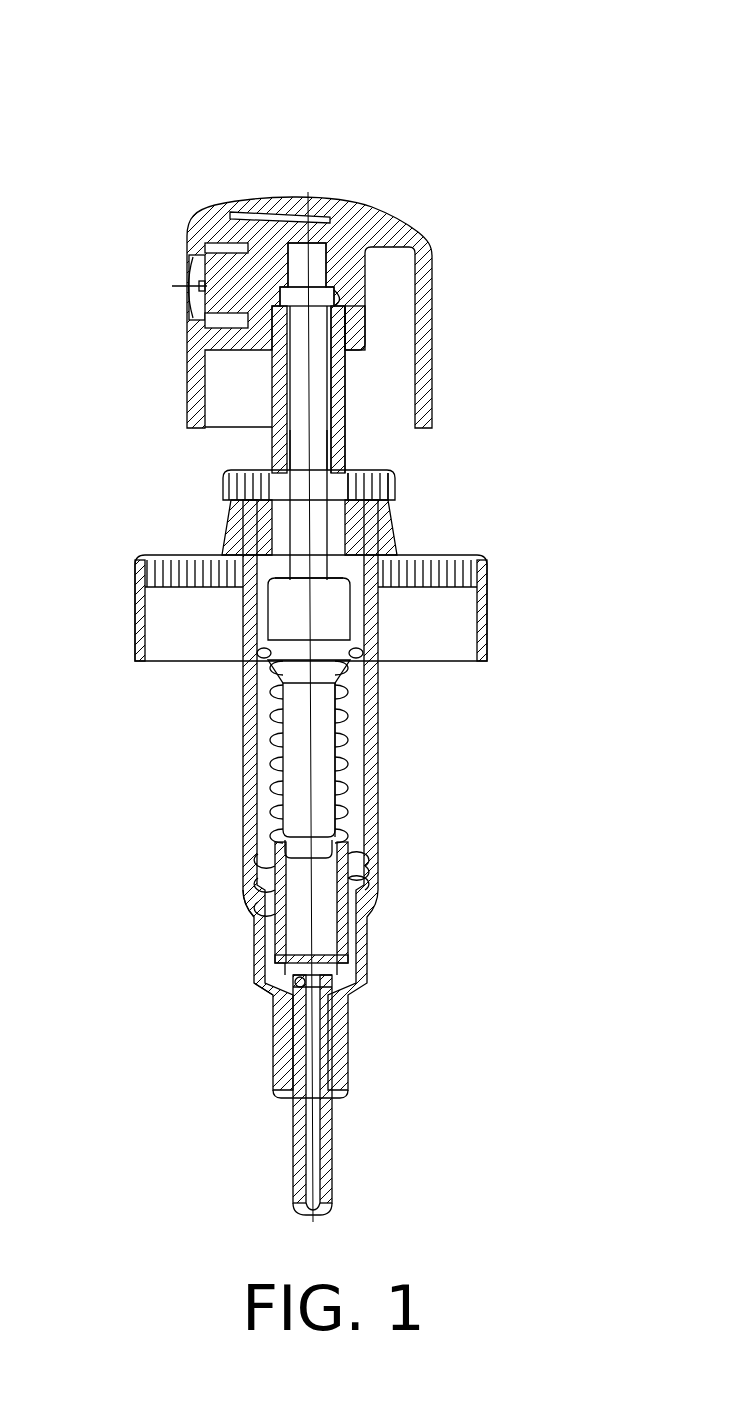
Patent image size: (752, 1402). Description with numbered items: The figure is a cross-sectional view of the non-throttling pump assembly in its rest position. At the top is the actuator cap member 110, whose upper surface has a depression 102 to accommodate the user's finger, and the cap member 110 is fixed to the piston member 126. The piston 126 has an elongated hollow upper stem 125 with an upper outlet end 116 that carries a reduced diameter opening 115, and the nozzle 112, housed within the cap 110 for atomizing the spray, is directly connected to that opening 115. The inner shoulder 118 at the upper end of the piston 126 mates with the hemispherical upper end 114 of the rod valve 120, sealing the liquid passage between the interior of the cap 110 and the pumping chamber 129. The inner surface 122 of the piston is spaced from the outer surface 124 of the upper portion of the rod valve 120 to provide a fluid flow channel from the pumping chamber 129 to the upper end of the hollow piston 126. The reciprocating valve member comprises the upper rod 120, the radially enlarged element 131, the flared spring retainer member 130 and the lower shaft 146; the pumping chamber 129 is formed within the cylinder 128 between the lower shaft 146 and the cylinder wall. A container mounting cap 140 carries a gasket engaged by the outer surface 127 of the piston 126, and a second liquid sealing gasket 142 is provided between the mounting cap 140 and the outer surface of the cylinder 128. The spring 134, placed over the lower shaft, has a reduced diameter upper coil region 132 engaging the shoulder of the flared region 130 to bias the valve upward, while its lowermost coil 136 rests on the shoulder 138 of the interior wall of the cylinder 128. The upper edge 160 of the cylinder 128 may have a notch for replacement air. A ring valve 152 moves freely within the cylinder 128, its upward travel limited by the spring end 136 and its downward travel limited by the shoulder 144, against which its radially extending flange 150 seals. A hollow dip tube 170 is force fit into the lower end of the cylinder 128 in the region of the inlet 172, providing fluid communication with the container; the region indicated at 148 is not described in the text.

The depression 102 is at (332, 210).
The actuator cap member 110 is at (432, 332).
The nozzle 112 is at (202, 258).
The hemispherical upper end 114 is at (316, 315).
The reduced diameter opening 115 is at (307, 300).
The upper outlet end 116 is at (332, 298).
The inner shoulder 118 is at (208, 333).
The rod valve 120 is at (343, 452).
The inner surface of the piston 122 is at (343, 370).
The outer surface of the upper portion of the rod valve 124 is at (327, 410).
The elongated hollow upper stem 125 is at (343, 410).
The piston member 126 is at (345, 462).
The outer surface of the piston 127 is at (317, 450).
The cylinder 128 is at (487, 660).
The pumping chamber 129 is at (380, 698).
The flared spring retainer member 130 is at (330, 613).
The radially enlarged element 131 is at (293, 603).
The reduced diameter upper coil region 132 is at (360, 652).
The spring 134 is at (360, 737).
The lowermost coil 136 is at (357, 883).
The shoulder of the interior wall of the cylinder 138 is at (367, 918).
The container mounting cap 140 is at (487, 606).
The second liquid sealing gasket 142 is at (447, 573).
The shoulder 144 is at (397, 502).
The lower shaft 146 is at (330, 797).
The spring coil 148 is at (263, 727).
The radially extending flange 150 is at (253, 910).
The ring valve 152 is at (257, 973).
The upper edge 160 is at (240, 510).
The hollow dip tube 170 is at (327, 1113).
The inlet 172 is at (330, 987).